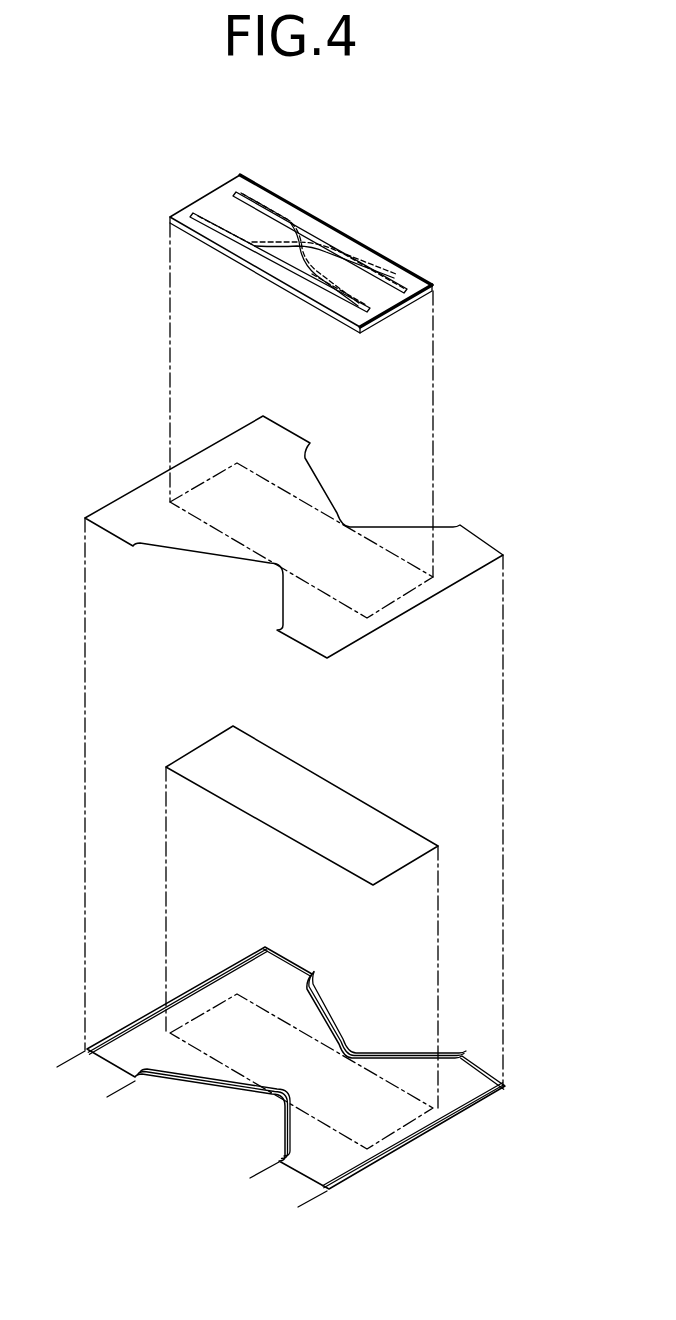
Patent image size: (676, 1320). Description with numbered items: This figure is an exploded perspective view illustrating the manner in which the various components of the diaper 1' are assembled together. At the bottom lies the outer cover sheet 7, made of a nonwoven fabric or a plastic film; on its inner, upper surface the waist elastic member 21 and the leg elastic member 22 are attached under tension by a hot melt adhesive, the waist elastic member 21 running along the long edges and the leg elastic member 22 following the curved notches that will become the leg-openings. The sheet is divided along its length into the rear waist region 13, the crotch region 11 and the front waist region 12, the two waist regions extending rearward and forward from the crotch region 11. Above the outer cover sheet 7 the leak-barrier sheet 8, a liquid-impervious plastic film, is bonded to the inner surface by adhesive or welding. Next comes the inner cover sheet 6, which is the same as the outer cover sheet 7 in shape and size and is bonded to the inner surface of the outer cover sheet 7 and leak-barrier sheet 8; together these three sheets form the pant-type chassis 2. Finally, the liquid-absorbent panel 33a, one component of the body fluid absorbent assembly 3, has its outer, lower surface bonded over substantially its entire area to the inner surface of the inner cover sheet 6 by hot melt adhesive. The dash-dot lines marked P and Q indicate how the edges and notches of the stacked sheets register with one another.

The diaper 1' is at (309, 650).
The body fluid absorbent assembly 3 is at (282, 167).
The liquid-absorbent panel 33a is at (210, 193).
The pant-type chassis 2 is at (525, 540).
The inner cover sheet 6 is at (470, 531).
The leak-barrier sheet 8 is at (373, 807).
The outer cover sheet 7 is at (476, 1068).
The waist elastic member 21 is at (242, 967).
The leg elastic member 22 is at (318, 1015).
The rear waist region 13 is at (90, 1080).
The crotch region 11 is at (186, 1132).
The front waist region 12 is at (287, 1192).
The side edge direction P is at (150, 455).
The notch direction Q is at (360, 497).